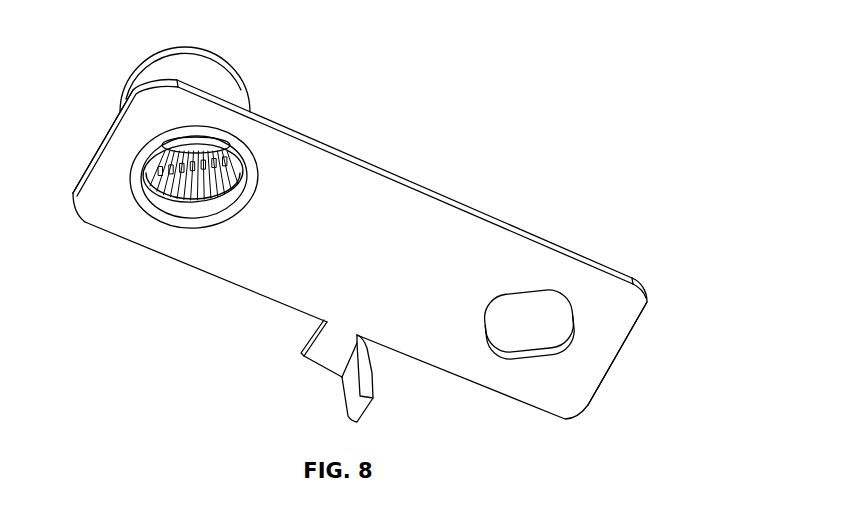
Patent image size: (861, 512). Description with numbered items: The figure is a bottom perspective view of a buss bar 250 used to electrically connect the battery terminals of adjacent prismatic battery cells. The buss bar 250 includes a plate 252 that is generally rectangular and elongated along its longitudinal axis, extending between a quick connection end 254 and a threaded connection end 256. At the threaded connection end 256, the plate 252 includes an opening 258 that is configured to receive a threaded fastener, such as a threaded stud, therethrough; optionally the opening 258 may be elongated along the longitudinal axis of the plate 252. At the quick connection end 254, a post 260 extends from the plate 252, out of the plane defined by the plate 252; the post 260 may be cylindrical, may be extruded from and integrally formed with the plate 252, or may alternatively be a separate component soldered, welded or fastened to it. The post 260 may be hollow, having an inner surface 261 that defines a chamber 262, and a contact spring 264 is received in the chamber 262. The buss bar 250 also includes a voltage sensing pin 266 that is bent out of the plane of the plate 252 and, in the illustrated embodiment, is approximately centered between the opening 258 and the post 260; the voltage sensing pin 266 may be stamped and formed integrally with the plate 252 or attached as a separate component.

The buss bar 250 is at (453, 110).
The plate 252 is at (442, 215).
The quick connection end 254 is at (91, 116).
The threaded connection end 256 is at (652, 348).
The opening 258 is at (537, 319).
The post 260 is at (223, 68).
The inner surface 261 is at (218, 205).
The chamber 262 is at (180, 212).
The contact spring 264 is at (150, 197).
The voltage sensing pin 266 is at (352, 391).